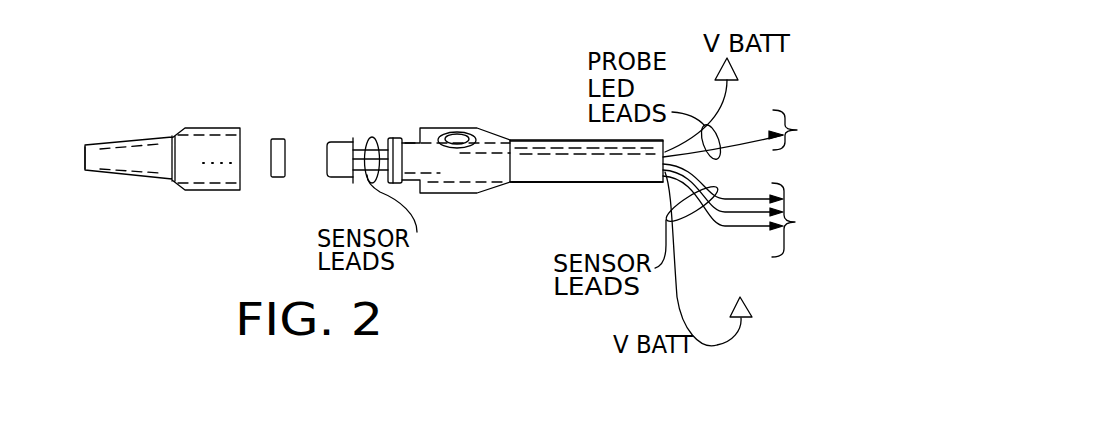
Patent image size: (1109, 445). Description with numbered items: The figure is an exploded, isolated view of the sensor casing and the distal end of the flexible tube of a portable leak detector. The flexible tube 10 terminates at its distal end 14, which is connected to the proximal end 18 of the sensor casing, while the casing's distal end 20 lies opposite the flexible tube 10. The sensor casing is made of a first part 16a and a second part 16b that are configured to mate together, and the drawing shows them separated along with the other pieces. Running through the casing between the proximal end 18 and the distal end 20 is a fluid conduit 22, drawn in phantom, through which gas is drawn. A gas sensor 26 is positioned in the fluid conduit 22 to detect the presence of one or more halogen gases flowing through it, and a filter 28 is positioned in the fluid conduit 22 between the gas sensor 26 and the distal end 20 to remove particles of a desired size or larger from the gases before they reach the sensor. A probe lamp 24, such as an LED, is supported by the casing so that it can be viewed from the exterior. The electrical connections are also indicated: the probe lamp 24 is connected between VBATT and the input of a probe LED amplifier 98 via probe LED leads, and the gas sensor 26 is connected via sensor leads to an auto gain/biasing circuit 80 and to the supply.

The flexible tube 10 is at (573, 167).
The distal end of flexible tube 14 is at (517, 183).
The first part 16a is at (195, 126).
The second part 16b is at (432, 128).
The proximal end 18 is at (511, 138).
The distal end 20 is at (78, 150).
The fluid conduit 22 is at (215, 182).
The probe lamp 24 is at (458, 133).
The gas sensor 26 is at (338, 141).
The filter 28 is at (282, 138).
The auto gain/biasing circuit 80 is at (785, 243).
The probe LED amplifier 98 is at (800, 121).